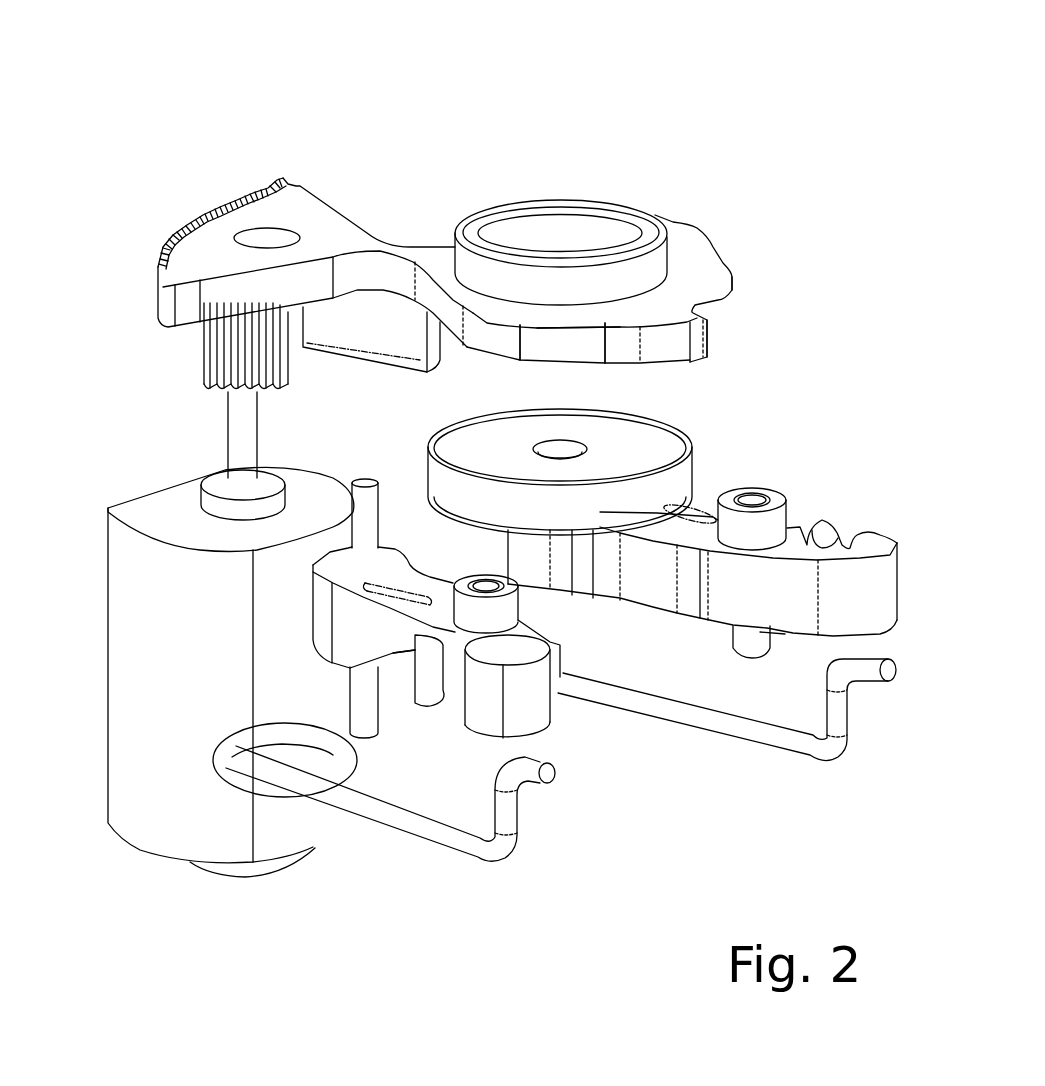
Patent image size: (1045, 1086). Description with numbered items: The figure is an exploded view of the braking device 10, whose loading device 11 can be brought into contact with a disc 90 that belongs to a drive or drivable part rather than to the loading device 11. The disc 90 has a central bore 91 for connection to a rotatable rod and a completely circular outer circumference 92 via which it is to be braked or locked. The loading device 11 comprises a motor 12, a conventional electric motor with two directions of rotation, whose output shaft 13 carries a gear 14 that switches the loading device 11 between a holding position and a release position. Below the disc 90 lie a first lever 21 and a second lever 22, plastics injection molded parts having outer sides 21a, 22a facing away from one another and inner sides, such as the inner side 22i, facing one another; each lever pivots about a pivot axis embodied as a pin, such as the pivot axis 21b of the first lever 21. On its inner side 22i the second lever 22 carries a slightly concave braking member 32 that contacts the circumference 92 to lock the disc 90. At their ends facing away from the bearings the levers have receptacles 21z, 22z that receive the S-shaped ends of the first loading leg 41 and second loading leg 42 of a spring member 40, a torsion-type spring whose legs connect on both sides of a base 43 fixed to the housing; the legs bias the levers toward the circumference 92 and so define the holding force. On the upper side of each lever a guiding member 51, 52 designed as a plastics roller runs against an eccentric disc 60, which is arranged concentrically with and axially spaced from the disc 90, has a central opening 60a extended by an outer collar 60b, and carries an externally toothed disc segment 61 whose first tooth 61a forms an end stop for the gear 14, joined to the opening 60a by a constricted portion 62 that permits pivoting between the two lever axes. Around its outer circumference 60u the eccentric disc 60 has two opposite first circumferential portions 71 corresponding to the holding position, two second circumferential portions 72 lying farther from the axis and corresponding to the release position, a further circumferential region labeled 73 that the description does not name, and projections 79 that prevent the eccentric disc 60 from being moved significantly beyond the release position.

The braking device 10 is at (356, 152).
The loading device 11 is at (740, 225).
The motor 12 is at (160, 838).
The output shaft 13 is at (243, 437).
The gear 14 is at (202, 363).
The first lever 21 is at (360, 610).
The outer side of first lever 21a is at (413, 648).
The pivot axis of first lever 21b is at (313, 551).
The receptacle of first lever 21z is at (500, 645).
The second lever 22 is at (868, 593).
The outer side of second lever 22a is at (815, 519).
The inner side of second lever 22i is at (784, 612).
The receptacle of second lever 22z is at (837, 538).
The braking member 32 is at (650, 587).
The spring member 40 is at (328, 795).
The first loading leg 41 is at (452, 840).
The second loading leg 42 is at (837, 717).
The base 43 is at (397, 712).
The guiding member 51 is at (357, 641).
The guiding member 52 is at (767, 537).
The eccentric disc 60 is at (690, 255).
The central opening 60a is at (565, 237).
The outer collar 60b is at (472, 268).
The outer circumference 60u is at (725, 307).
The toothed disc segment 61 is at (205, 214).
The first tooth 61a is at (285, 175).
The constricted portion 62 is at (377, 275).
The first circumferential portion 71 is at (512, 343).
The second circumferential portion 72 is at (622, 350).
The plate front face 73 is at (565, 348).
The projection 79 is at (698, 335).
The disc 90 is at (660, 450).
The central bore 91 is at (580, 443).
The outer circumference 92 is at (670, 492).